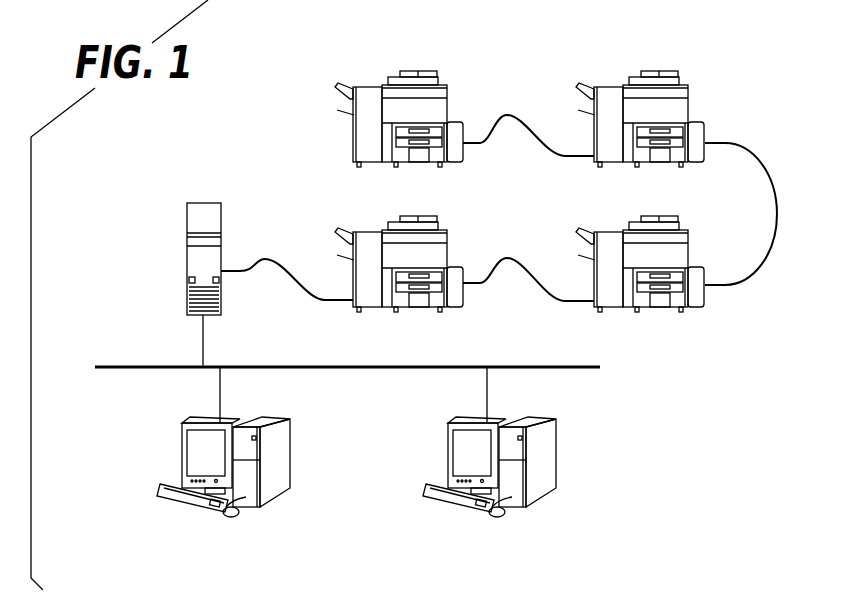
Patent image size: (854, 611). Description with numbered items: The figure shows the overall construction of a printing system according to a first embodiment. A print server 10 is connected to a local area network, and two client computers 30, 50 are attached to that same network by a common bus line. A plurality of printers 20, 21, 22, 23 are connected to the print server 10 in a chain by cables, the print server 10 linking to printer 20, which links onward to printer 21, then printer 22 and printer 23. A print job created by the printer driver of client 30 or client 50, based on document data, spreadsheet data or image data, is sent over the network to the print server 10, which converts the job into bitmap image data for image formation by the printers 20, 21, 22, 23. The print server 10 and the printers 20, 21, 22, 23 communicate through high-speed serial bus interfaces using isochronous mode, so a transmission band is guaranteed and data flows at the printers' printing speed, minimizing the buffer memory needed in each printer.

The print server 10 is at (203, 200).
The printer 20 is at (425, 216).
The printer 21 is at (668, 216).
The printer 22 is at (668, 71).
The printer 23 is at (425, 71).
The client 30 is at (275, 497).
The client 50 is at (541, 497).